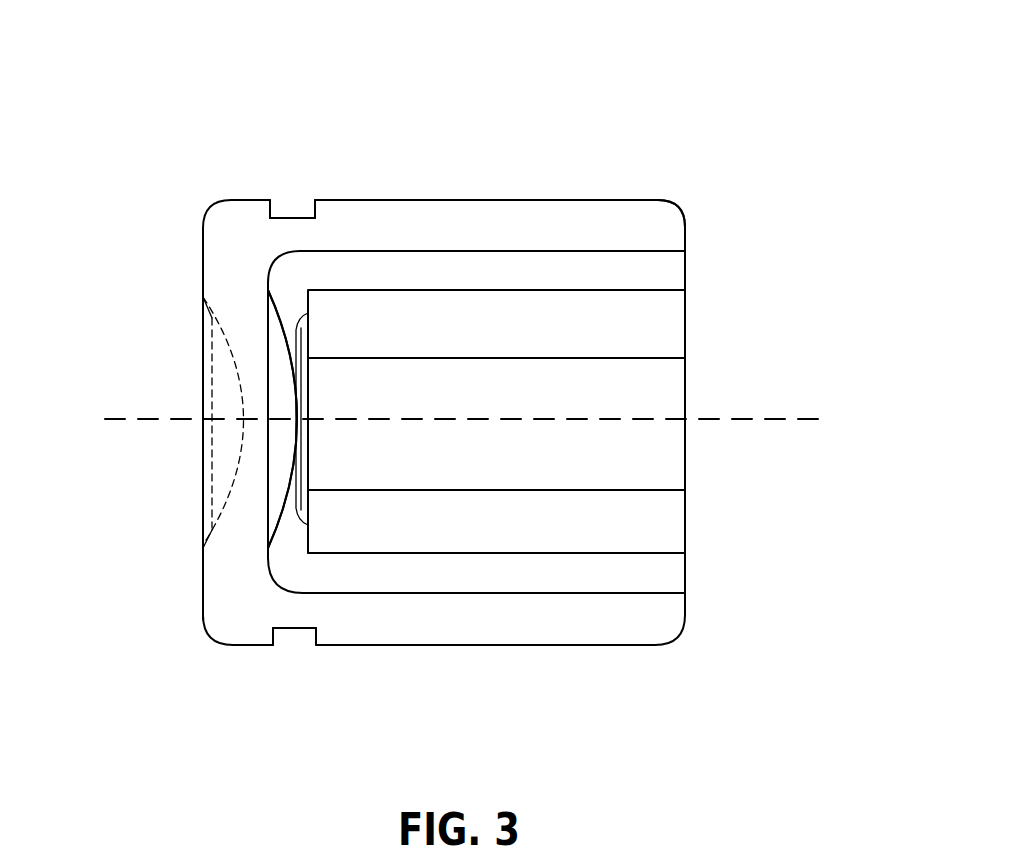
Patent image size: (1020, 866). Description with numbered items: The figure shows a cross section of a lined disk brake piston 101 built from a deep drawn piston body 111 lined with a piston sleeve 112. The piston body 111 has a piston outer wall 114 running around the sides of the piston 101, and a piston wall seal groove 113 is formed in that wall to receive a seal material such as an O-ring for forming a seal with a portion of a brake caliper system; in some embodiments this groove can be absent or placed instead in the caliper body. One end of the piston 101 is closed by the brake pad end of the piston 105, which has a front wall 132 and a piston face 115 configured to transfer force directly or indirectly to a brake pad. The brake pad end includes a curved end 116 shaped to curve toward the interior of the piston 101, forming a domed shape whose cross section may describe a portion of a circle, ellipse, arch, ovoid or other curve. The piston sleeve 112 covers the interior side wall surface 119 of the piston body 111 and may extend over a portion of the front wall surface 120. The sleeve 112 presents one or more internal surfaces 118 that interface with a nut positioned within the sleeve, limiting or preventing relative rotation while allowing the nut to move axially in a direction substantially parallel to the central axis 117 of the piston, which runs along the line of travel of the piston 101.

The disk brake piston 101 is at (610, 152).
The brake pad end of the piston 105 is at (223, 577).
The piston body 111 is at (517, 623).
The piston sleeve 112 is at (672, 575).
The piston wall seal groove 113 is at (298, 207).
The piston outer wall 114 is at (660, 226).
The piston face 115 is at (202, 570).
The curved end 116 is at (268, 450).
The central axis of the piston 117 is at (162, 420).
The internal surfaces of the sleeve 118 is at (670, 337).
The interior side wall surface 119 is at (588, 253).
The front wall surface 120 is at (268, 290).
The front wall 132 is at (222, 292).